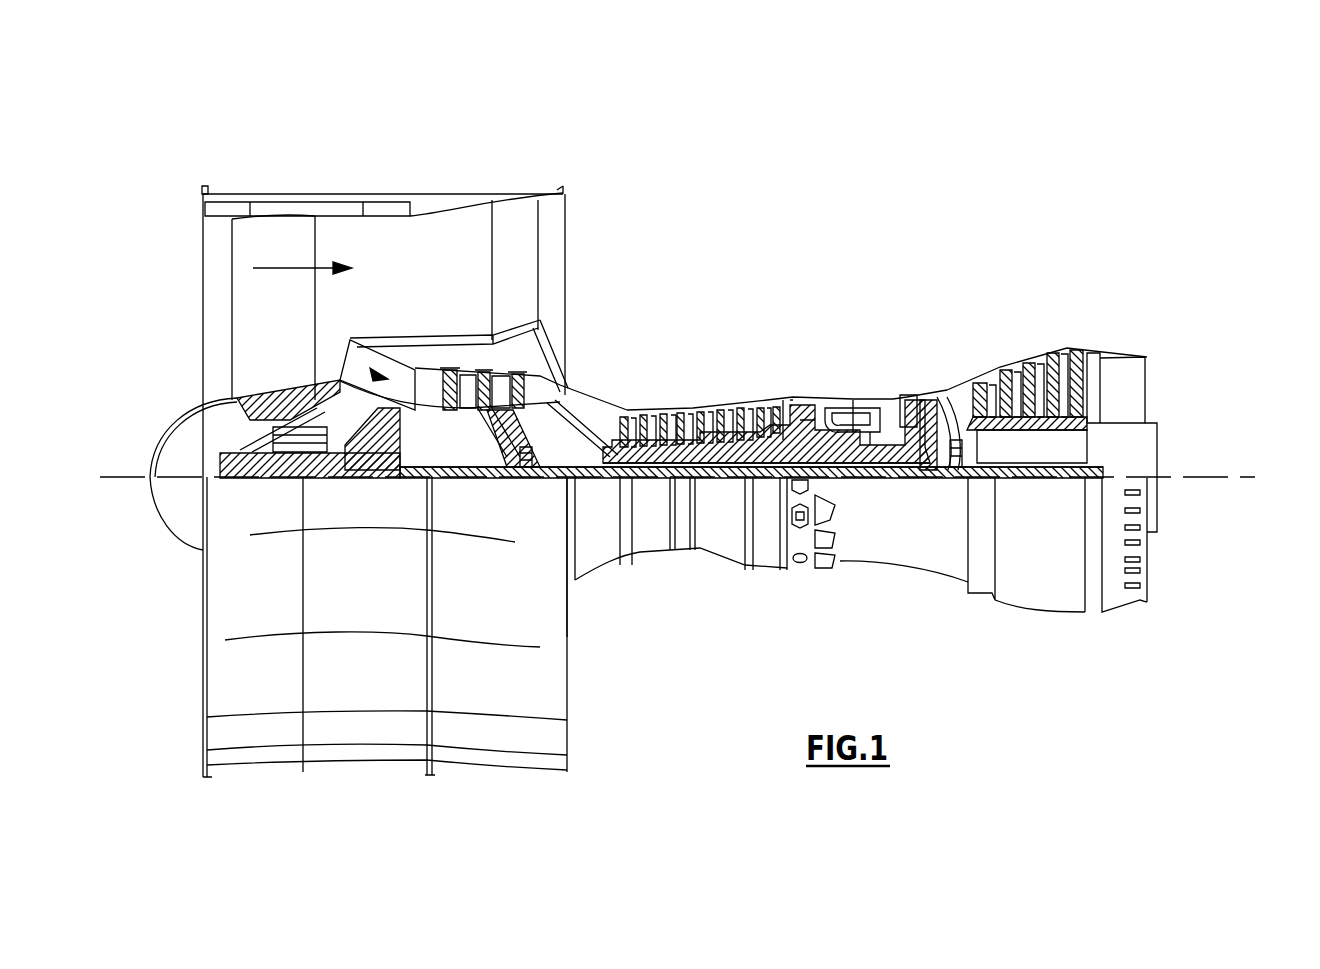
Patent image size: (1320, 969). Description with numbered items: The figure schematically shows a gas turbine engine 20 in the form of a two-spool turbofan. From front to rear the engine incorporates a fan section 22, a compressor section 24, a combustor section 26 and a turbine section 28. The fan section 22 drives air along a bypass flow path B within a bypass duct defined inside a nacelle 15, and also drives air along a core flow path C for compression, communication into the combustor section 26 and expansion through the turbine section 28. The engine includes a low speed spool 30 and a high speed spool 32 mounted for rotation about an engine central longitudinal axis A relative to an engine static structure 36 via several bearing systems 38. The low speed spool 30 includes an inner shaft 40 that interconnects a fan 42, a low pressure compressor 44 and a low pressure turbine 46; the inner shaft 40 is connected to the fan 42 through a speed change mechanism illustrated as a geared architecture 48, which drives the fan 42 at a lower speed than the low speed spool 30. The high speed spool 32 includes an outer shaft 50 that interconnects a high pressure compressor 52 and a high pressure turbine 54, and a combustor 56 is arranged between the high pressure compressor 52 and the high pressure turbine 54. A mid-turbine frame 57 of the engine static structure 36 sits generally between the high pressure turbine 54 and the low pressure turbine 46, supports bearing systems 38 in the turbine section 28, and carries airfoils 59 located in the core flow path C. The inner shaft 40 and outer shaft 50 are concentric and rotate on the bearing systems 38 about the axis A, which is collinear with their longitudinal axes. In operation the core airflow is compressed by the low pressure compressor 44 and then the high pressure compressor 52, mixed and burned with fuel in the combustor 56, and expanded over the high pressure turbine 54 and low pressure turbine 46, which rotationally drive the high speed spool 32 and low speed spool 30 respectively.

The nacelle 15 is at (387, 196).
The gas turbine engine 20 is at (843, 248).
The fan section 22 is at (358, 446).
The compressor section 24 is at (743, 387).
The combustor section 26 is at (751, 396).
The turbine section 28 is at (1028, 437).
The low speed spool 30 is at (723, 478).
The high speed spool 32 is at (765, 440).
The engine static structure 36 is at (763, 565).
The bearing systems 38 is at (527, 470).
The inner shaft 40 is at (587, 480).
The fan 42 is at (290, 324).
The low pressure compressor 44 is at (487, 387).
The low pressure turbine 46 is at (1033, 370).
The geared architecture 48 is at (393, 463).
The outer shaft 50 is at (848, 470).
The high pressure compressor 52 is at (700, 447).
The high pressure turbine 54 is at (907, 397).
The combustor 56 is at (840, 420).
The mid-turbine frame 57 is at (945, 391).
The airfoils 59 is at (947, 413).
The engine central longitudinal axis A is at (1240, 477).
The bypass flow path B is at (295, 265).
The core flow path C is at (372, 372).